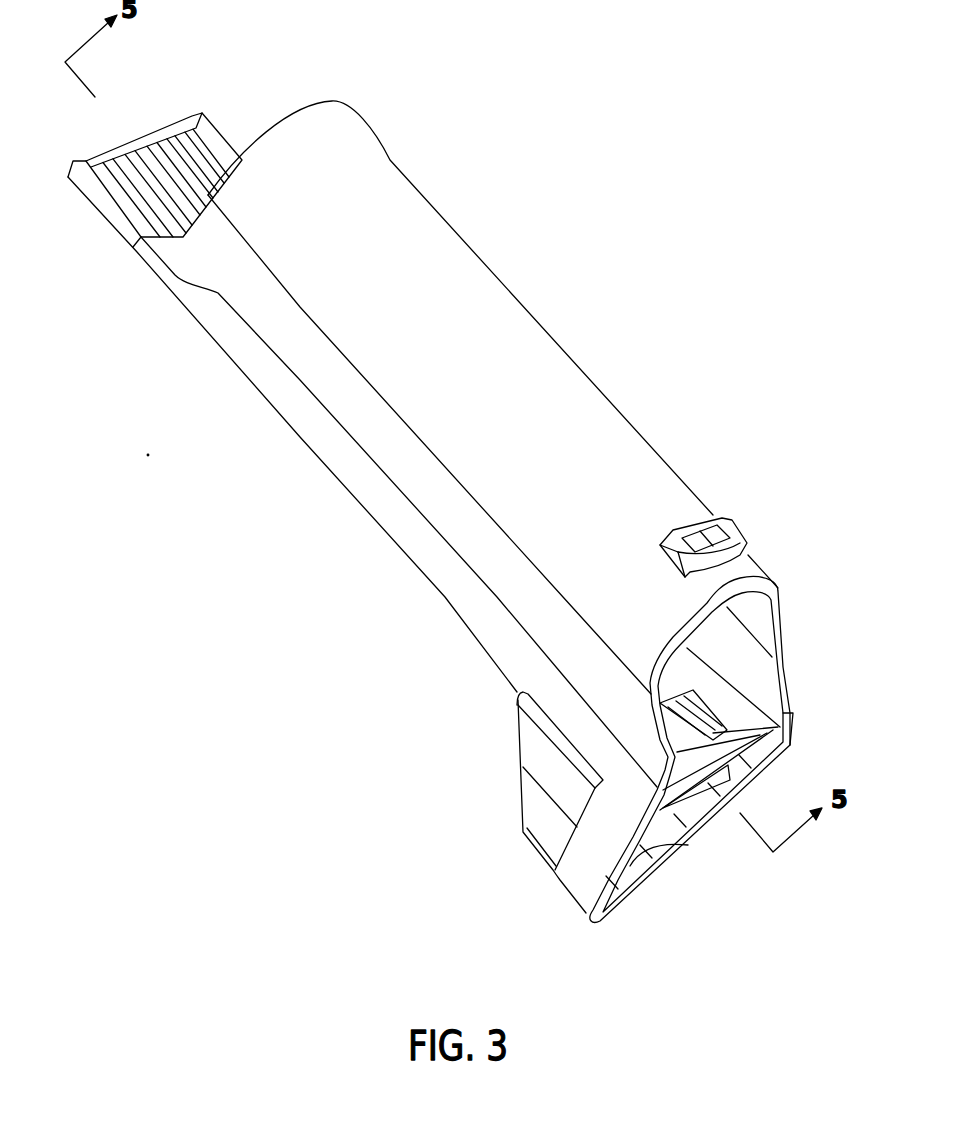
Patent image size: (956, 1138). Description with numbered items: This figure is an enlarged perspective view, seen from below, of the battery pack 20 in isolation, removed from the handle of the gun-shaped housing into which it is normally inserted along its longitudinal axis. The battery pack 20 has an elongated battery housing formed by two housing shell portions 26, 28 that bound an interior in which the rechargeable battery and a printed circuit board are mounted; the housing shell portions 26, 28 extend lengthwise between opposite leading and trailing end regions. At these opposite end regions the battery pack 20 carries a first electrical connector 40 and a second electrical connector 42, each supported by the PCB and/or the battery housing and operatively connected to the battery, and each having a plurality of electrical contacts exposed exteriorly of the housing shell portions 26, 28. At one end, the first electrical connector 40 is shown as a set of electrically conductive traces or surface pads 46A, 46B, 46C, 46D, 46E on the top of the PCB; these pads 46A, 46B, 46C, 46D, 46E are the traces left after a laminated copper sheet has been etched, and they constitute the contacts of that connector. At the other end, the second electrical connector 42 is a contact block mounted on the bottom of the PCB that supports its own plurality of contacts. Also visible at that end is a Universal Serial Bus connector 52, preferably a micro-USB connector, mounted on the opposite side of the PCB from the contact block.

The battery pack 20 is at (440, 482).
The housing shell portion 26 is at (525, 320).
The housing shell portion 28 is at (418, 575).
The first electrical connector 40 is at (147, 140).
The second electrical connector 42 is at (745, 700).
The surface pad 46A is at (102, 173).
The surface pad 46B is at (137, 180).
The surface pad 46C is at (143, 182).
The surface pad 46D is at (177, 157).
The surface pad 46E is at (193, 150).
The Universal Serial Bus (USB) connector 52 is at (657, 837).